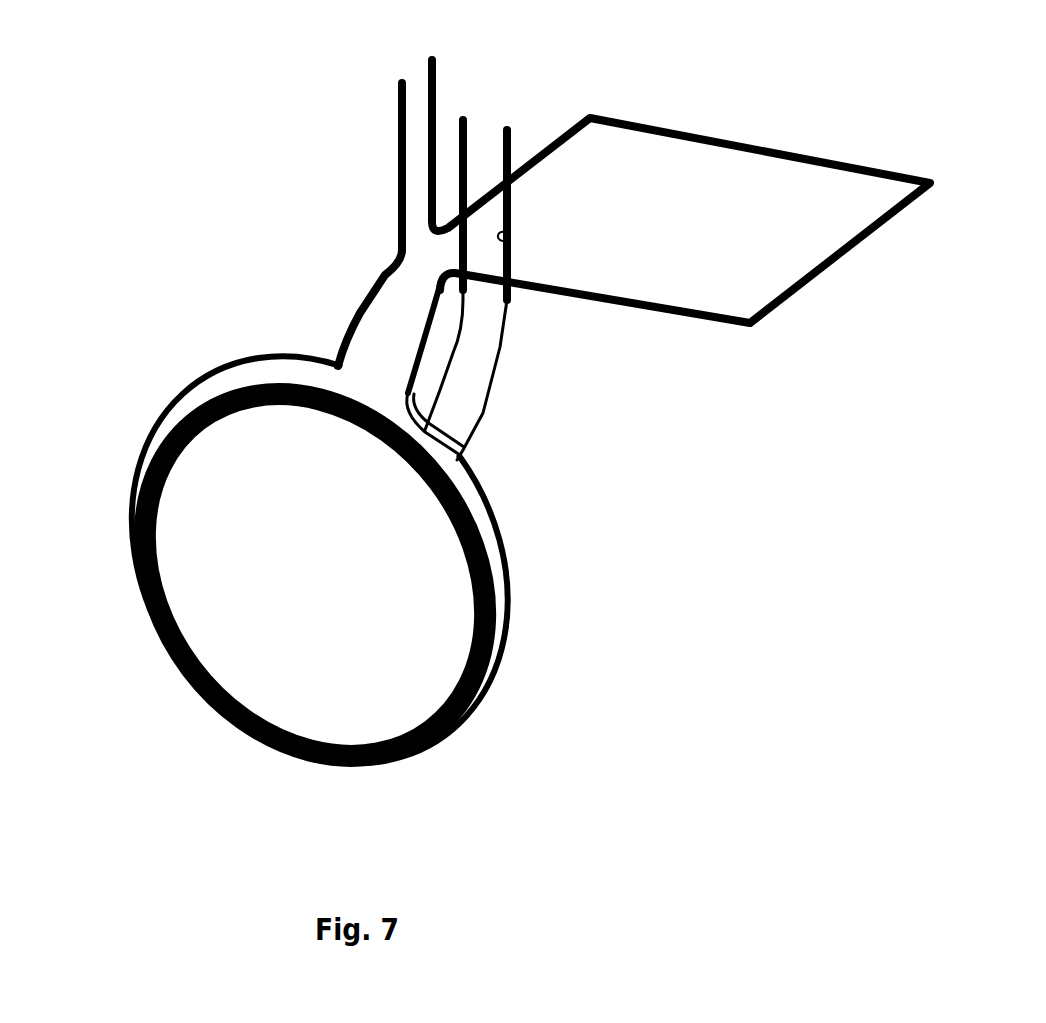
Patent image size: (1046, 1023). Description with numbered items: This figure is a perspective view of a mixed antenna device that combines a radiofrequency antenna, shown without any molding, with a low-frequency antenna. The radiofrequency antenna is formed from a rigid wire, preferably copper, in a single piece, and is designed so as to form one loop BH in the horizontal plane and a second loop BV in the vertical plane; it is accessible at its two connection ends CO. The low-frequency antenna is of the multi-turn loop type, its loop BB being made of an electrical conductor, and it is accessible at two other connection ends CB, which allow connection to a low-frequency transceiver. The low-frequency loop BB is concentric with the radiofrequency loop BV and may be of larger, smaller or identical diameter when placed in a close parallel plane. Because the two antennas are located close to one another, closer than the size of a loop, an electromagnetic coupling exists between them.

The connection ends of the radiofrequency antenna CO is at (397, 138).
The connection ends of the low-frequency antenna CB is at (510, 145).
The horizontal loop of the radiofrequency antenna BH is at (657, 124).
The second loop of the radiofrequency antenna BV is at (485, 496).
The loop of the low-frequency antenna BB is at (468, 664).